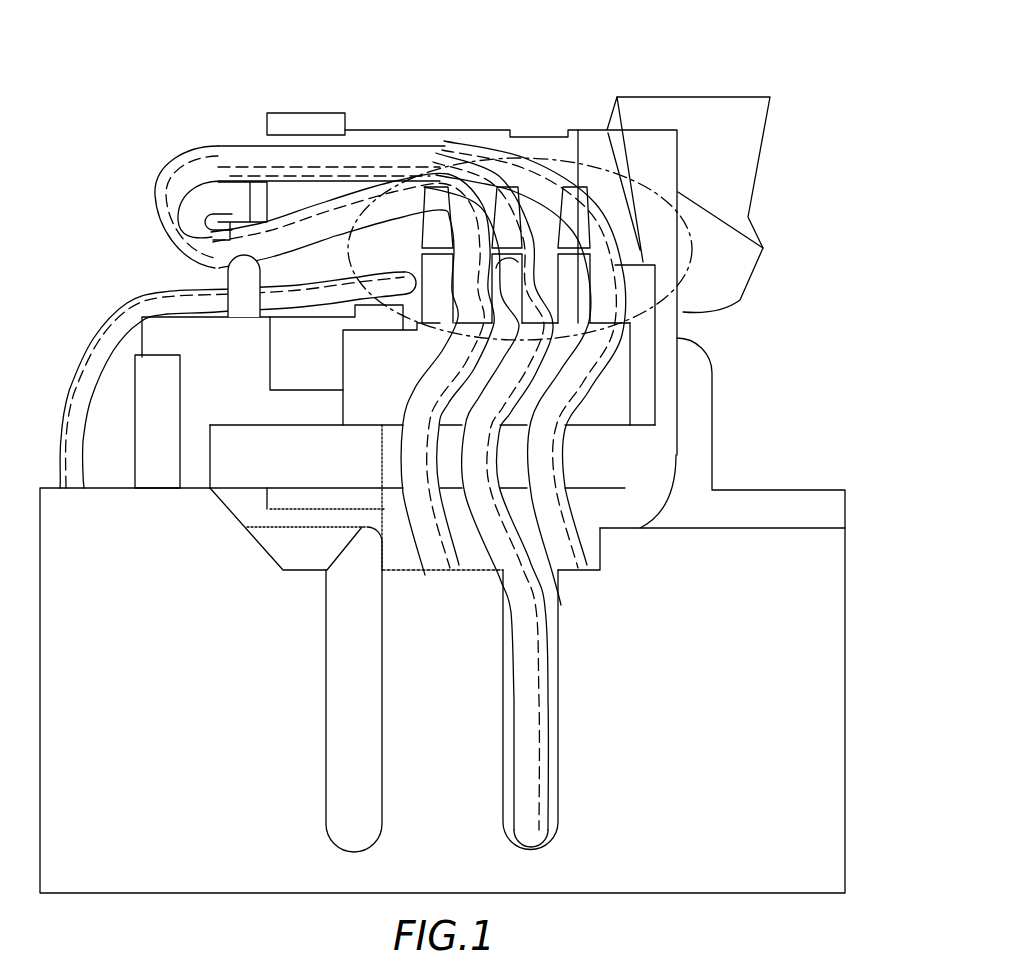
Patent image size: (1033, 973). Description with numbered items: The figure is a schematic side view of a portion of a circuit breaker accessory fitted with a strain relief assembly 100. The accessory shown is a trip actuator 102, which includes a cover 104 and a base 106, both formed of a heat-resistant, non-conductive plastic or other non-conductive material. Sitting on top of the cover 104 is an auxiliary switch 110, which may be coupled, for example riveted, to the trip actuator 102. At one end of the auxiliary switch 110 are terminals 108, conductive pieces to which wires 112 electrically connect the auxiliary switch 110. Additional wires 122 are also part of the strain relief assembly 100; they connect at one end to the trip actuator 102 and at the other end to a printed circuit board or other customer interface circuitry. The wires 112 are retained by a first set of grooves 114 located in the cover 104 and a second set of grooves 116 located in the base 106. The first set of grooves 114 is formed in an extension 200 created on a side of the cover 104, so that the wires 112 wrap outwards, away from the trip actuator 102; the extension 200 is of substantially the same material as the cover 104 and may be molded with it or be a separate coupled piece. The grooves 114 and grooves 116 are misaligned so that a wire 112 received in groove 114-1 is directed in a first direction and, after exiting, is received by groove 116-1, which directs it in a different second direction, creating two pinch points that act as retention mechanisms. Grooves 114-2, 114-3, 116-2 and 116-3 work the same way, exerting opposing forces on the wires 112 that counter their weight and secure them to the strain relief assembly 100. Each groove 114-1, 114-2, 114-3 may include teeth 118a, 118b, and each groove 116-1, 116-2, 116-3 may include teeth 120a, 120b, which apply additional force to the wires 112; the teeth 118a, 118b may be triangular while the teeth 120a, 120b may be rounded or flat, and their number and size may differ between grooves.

The strain relief assembly 100 is at (808, 91).
The trip actuator 102 is at (620, 363).
The cover 104 is at (636, 155).
The base 106 is at (666, 465).
The terminals 108 is at (258, 188).
The auxiliary switch 110 is at (372, 130).
The wires 112 is at (175, 158).
The first set of grooves 114 is at (652, 244).
The groove 114-1 is at (452, 186).
The groove 114-2 is at (526, 180).
The groove 114-3 is at (592, 180).
The second set of grooves 116 is at (363, 474).
The groove 116-1 is at (405, 465).
The groove 116-2 is at (510, 528).
The groove 116-3 is at (557, 446).
The tooth 118a is at (448, 308).
The tooth 118b is at (507, 257).
The tooth 120a is at (397, 442).
The tooth 120b is at (530, 430).
The wires 122 is at (152, 292).
The extension 200 is at (672, 176).